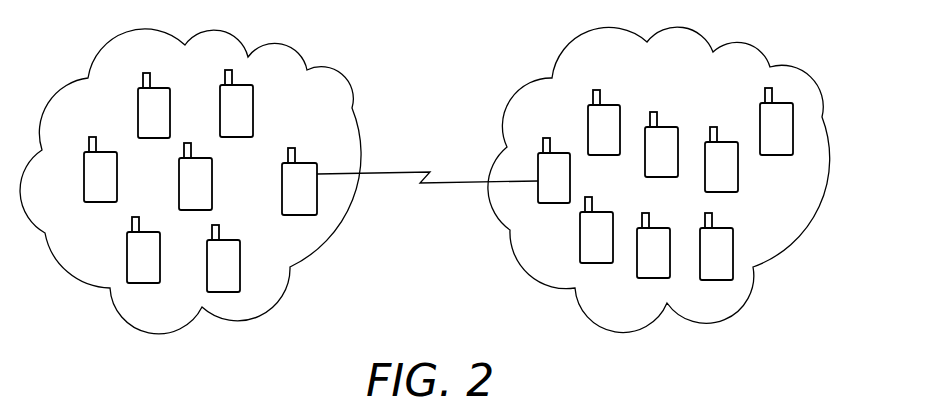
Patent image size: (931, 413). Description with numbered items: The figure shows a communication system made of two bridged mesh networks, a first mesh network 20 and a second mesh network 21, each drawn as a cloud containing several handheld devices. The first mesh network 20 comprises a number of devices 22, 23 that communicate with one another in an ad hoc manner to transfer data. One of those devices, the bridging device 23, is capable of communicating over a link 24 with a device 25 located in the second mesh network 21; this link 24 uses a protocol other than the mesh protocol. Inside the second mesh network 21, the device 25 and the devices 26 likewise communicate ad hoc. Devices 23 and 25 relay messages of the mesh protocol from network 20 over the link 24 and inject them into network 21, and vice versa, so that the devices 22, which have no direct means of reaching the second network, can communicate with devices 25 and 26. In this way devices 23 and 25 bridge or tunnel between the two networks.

The first mesh network 20 is at (173, 332).
The second mesh network 21 is at (700, 331).
The devices 22 is at (137, 100).
The bridging device 23 is at (308, 160).
The link 24 is at (428, 184).
The bridging device of second network 25 is at (556, 205).
The devices 26 is at (623, 110).